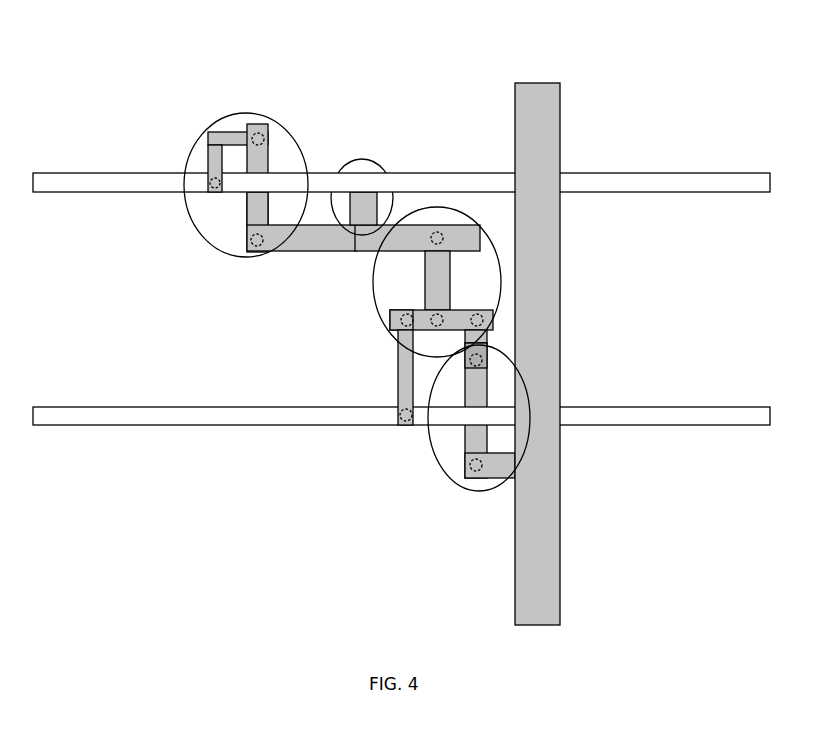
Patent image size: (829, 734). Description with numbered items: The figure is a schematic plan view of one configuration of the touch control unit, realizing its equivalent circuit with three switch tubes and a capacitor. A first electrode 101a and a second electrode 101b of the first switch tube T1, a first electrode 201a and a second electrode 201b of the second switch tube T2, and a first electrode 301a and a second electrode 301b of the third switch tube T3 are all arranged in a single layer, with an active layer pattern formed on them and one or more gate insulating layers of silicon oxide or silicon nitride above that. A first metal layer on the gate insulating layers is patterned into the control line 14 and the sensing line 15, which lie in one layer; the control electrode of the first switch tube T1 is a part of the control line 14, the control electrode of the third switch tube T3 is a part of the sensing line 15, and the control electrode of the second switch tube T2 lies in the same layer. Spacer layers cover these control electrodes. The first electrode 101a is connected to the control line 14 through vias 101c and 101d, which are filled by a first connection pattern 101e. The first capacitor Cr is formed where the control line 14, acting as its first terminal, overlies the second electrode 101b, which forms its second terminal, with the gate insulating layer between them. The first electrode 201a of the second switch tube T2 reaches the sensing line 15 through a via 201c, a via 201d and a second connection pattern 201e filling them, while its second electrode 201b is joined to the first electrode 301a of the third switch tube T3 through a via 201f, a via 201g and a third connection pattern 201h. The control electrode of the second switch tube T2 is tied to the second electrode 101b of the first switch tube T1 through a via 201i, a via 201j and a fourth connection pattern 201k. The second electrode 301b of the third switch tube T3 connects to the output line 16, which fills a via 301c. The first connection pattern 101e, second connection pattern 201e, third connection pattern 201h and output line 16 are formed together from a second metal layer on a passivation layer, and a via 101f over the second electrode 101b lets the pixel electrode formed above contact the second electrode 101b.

The control line 14 is at (623, 178).
The sensing line 15 is at (708, 420).
The output line 16 is at (550, 133).
The first electrode of the first switch tube 101a is at (262, 124).
The second electrode of the first switch tube 101b is at (270, 250).
The via 101c is at (265, 140).
The via 101d is at (210, 177).
The first connection pattern 101e is at (227, 140).
The via 101f is at (251, 241).
The first electrode of the second switch tube 201a is at (390, 318).
The second electrode of the second switch tube 201b is at (493, 312).
The via 201c is at (402, 315).
The via 201d is at (407, 424).
The second connection pattern 201e is at (400, 373).
The via 201f is at (477, 313).
The via 201g is at (482, 360).
The third connection pattern 201h is at (483, 338).
The via 201i is at (433, 313).
The via 201j is at (440, 232).
The fourth connection pattern 201k is at (440, 272).
The first electrode of the third switch tube 301a is at (485, 378).
The second electrode of the third switch tube 301b is at (478, 445).
The via 301c is at (477, 471).
The first switch tube T1 is at (247, 113).
The second switch tube T2 is at (432, 207).
The third switch tube T3 is at (428, 447).
The first capacitor Cr is at (362, 159).